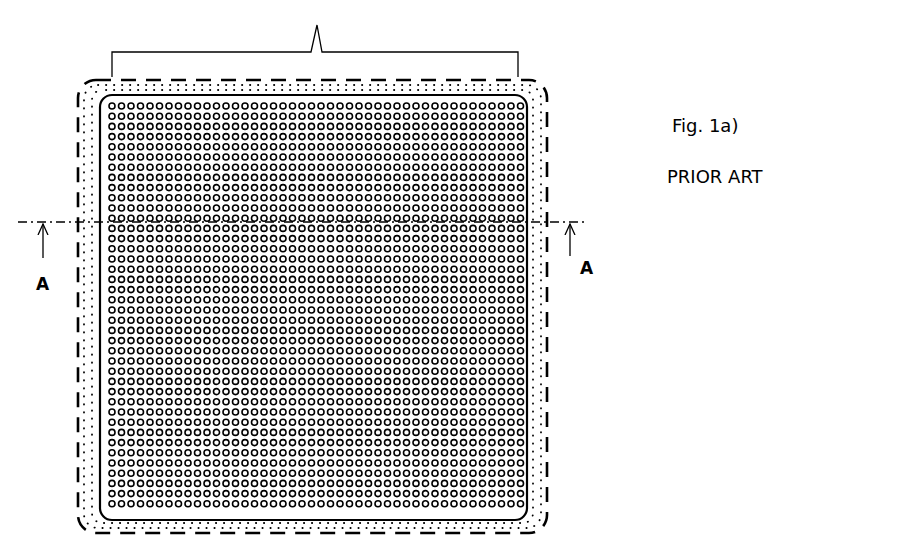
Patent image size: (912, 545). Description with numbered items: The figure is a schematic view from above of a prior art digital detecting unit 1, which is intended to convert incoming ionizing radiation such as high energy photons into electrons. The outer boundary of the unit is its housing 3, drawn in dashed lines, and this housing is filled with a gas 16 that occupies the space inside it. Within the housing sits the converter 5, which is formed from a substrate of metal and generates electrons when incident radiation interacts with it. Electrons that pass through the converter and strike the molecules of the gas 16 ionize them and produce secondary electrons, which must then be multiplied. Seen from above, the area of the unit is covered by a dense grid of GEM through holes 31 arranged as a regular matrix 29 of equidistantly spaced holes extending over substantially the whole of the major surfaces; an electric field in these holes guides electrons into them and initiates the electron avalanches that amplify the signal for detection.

The digital detecting unit 1 is at (389, 306).
The housing 3 is at (549, 353).
The gas 16 is at (534, 402).
The converter 5 is at (524, 462).
The GEM through holes 31 is at (514, 489).
The regular matrix 29 is at (315, 50).